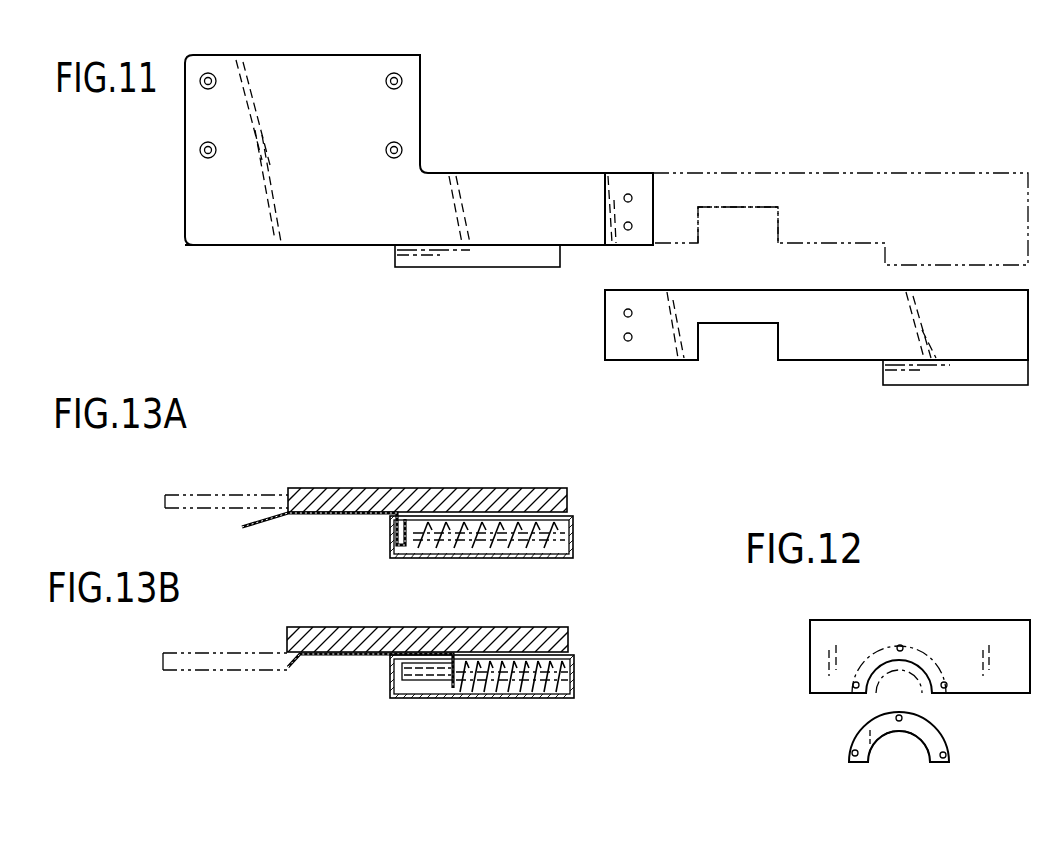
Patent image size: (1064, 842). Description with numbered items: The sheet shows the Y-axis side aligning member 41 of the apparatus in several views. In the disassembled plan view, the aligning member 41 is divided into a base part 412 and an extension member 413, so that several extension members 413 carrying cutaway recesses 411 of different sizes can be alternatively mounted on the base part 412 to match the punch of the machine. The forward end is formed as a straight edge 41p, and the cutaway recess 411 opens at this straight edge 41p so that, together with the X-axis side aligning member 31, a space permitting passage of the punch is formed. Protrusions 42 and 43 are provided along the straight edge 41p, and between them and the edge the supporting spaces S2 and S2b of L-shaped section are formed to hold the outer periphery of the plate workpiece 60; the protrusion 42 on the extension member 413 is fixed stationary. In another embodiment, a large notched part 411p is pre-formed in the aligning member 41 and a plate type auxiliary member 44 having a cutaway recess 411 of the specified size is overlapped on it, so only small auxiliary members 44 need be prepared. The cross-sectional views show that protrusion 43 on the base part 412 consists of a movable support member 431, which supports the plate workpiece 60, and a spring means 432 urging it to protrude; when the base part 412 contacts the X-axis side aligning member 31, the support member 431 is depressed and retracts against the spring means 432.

In FIG. 11, the Y-axis side aligning member 41 is at (401, 53).
In FIG. 12, the Y-axis side aligning member 41 is at (981, 630).
In FIG. 11, the straight edge 41p is at (838, 362).
In FIG. 11, the cutaway recess 411 is at (745, 230).
In FIG. 12, the cutaway recess 411 is at (899, 758).
In FIG. 12, the large notched part 411p is at (908, 680).
In FIG. 11, the base part 412 is at (316, 234).
In FIG. 13A, the base part 412 is at (367, 487).
In FIG. 13B, the base part 412 is at (426, 627).
In FIG. 11, the extension member 413 is at (862, 352).
In FIG. 11, the protrusion 42 is at (936, 377).
In FIG. 11, the protrusion 43 is at (471, 256).
In FIG. 13A, the protrusion 43 is at (385, 530).
In FIG. 13B, the protrusion 43 is at (383, 682).
In FIG. 13A, the movable support member 431 is at (297, 516).
In FIG. 13B, the movable support member 431 is at (324, 657).
In FIG. 13A, the spring means 432 is at (510, 549).
In FIG. 13B, the spring means 432 is at (505, 690).
In FIG. 12, the plate type auxiliary member 44 is at (940, 742).
In FIG. 13A, the plate workpiece 60 is at (188, 498).
In FIG. 13B, the X-axis side aligning member 31 is at (193, 655).
In FIG. 11, the supporting space S2 is at (512, 253).
In FIG. 13A, the supporting space S2 is at (284, 507).
In FIG. 11, the supporting space S2b is at (991, 370).